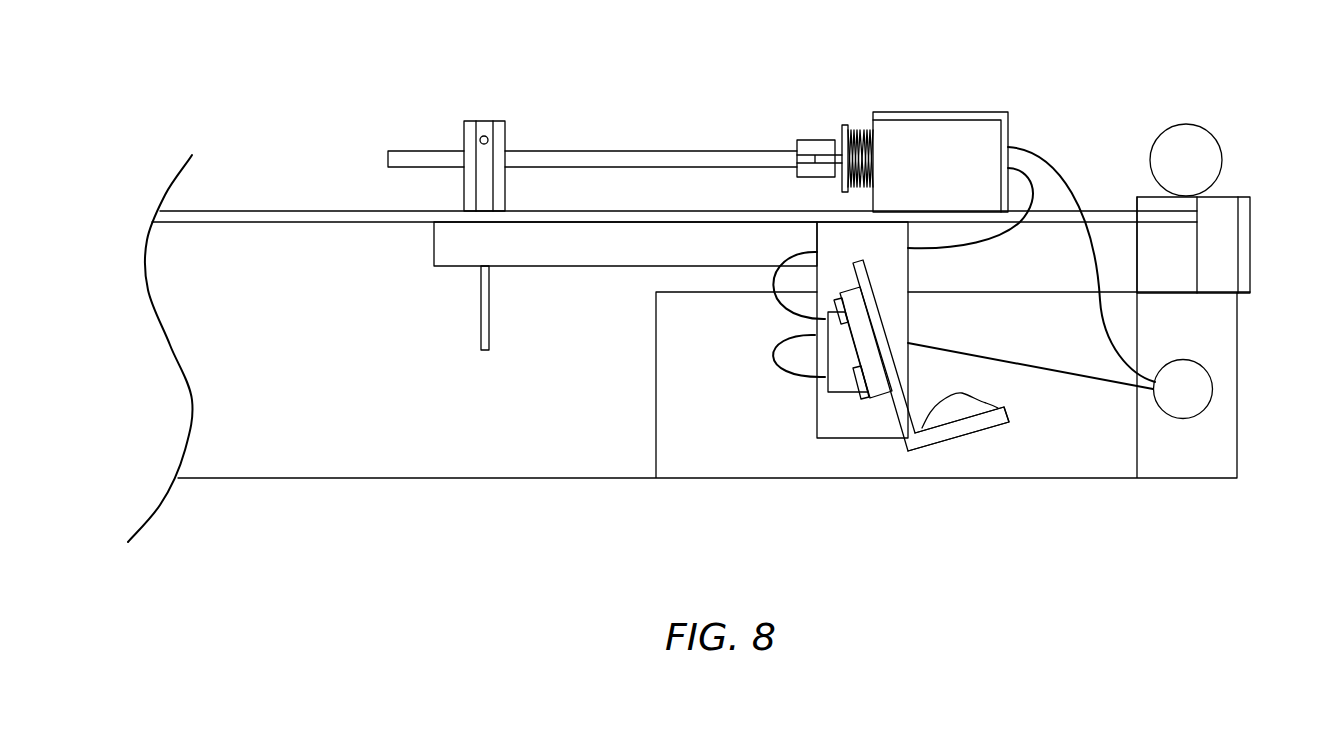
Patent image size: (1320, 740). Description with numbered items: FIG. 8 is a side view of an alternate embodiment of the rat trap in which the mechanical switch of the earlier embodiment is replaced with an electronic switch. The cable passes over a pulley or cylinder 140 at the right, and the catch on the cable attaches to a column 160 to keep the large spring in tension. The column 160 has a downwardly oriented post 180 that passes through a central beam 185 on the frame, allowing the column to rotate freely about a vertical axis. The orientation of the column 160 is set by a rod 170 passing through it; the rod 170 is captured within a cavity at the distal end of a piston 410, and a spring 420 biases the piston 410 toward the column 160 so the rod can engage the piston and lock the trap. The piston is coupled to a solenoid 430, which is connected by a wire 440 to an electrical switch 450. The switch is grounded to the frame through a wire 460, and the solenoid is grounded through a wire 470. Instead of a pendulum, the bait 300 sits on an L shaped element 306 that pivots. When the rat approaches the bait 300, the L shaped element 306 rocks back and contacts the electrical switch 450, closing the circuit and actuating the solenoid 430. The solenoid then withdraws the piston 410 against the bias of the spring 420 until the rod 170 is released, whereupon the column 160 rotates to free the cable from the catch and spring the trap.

The pulley or cylinder 140 is at (1195, 125).
The column 160 is at (505, 130).
The rod 170 is at (688, 152).
The post 180 is at (485, 318).
The central beam 185 is at (297, 213).
The bait 300 is at (985, 403).
The L shaped element 306 is at (968, 433).
The piston 410 is at (820, 143).
The spring 420 is at (850, 140).
The solenoid 430 is at (958, 130).
The wire 440 is at (783, 305).
The electrical switch 450 is at (838, 373).
The wire 460 is at (992, 355).
The wire 470 is at (1068, 170).